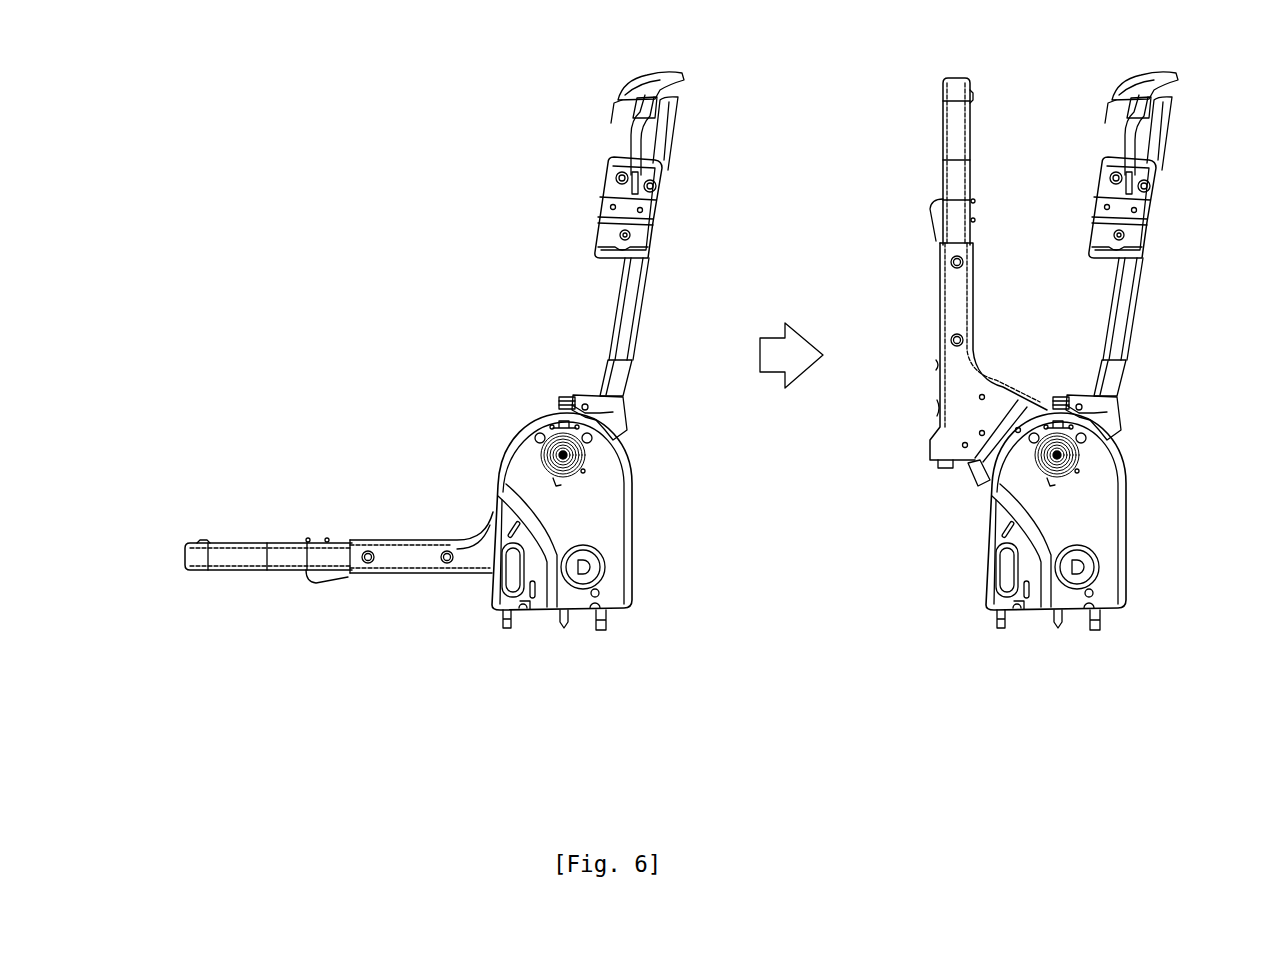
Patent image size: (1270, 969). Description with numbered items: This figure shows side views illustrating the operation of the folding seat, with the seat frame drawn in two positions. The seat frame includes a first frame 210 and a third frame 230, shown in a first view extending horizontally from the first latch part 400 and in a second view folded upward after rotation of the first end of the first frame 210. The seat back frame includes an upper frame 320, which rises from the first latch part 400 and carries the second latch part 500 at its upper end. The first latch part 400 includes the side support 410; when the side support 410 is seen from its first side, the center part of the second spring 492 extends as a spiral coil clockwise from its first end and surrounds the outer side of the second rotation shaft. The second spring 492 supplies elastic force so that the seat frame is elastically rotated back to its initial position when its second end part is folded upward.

The first frame 210 is at (414, 563).
The third frame 230 is at (251, 556).
The upper frame 320 is at (622, 327).
The first latch part 400 is at (681, 528).
The side support 410 is at (603, 527).
The second spring 492 is at (542, 452).
The second latch part 500 is at (607, 186).